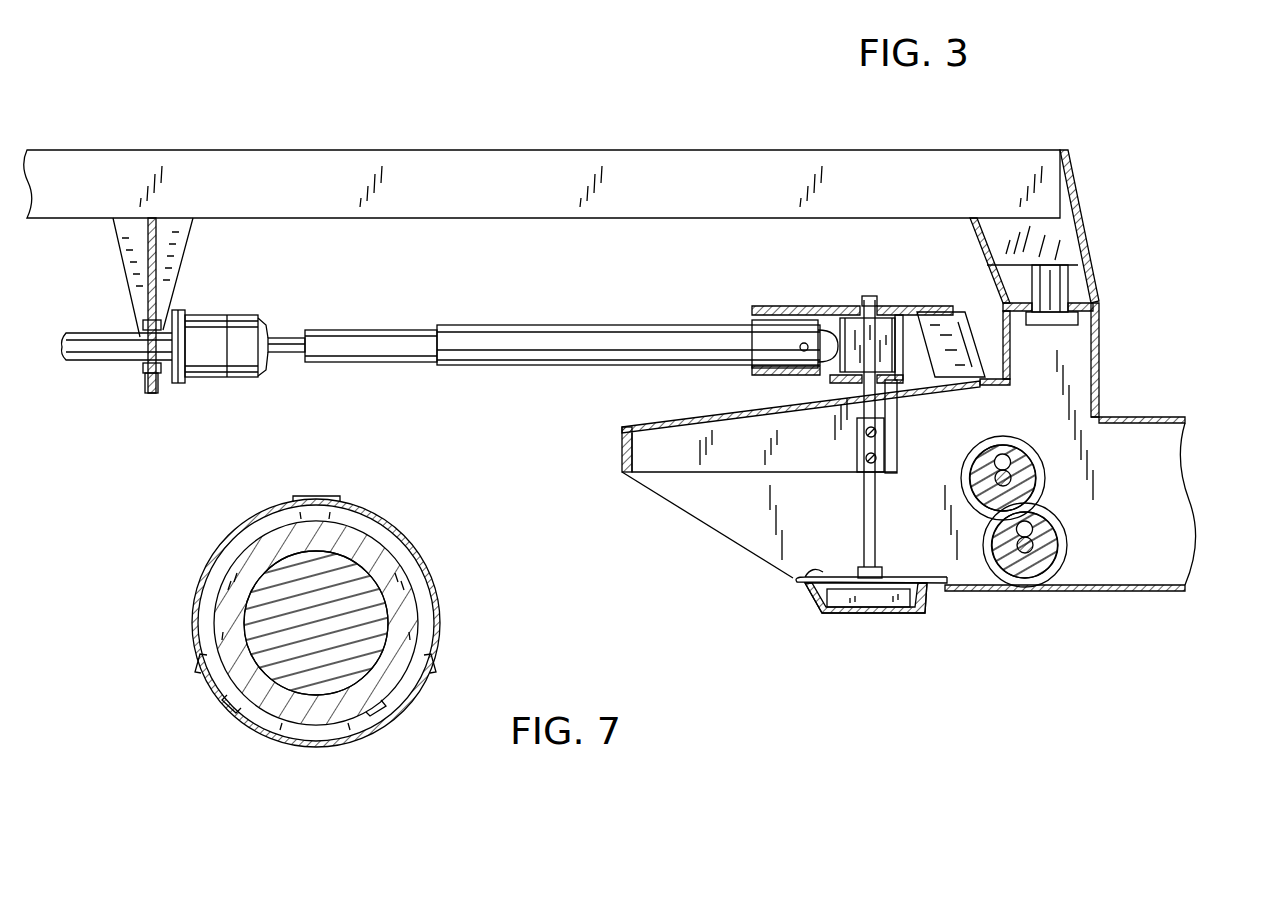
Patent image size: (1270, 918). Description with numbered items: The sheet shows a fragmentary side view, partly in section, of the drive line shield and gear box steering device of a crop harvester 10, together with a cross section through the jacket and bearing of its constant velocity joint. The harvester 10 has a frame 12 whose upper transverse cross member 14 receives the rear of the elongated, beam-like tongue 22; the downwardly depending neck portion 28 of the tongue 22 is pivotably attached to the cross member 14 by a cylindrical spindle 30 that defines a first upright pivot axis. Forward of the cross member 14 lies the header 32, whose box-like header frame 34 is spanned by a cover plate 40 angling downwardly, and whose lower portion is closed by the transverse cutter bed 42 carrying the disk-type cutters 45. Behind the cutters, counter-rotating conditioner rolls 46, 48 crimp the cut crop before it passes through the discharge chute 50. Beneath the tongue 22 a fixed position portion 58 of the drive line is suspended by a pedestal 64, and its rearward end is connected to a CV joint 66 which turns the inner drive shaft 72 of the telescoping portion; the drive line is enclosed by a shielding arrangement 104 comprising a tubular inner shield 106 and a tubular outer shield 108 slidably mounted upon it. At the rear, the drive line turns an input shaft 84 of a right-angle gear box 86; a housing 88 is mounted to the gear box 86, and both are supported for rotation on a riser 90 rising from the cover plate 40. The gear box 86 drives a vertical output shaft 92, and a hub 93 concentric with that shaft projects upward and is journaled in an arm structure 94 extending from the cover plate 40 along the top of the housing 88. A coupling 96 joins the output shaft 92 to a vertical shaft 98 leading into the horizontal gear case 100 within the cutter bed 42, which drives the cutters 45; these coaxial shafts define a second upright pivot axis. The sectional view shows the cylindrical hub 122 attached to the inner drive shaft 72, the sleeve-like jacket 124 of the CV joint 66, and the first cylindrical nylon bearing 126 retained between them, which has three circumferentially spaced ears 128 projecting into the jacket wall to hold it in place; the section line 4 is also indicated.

In FIG. 3, the section line 4- 4 is at (140, 348).
In FIG. 3, the crop harvester 10 is at (1142, 165).
In FIG. 3, the frame 12 is at (1100, 367).
In FIG. 3, the cross member 14 is at (1097, 330).
In FIG. 3, the tongue 22 is at (668, 172).
In FIG. 3, the neck portion 28 is at (1082, 228).
In FIG. 3, the spindle 30 is at (1052, 285).
In FIG. 3, the header 32 is at (612, 453).
In FIG. 3, the header frame 34 is at (622, 445).
In FIG. 3, the cover plate 40 is at (740, 412).
In FIG. 3, the cutter bed 42 is at (800, 610).
In FIG. 3, the disk-type cutters 45 is at (812, 574).
In FIG. 3, the conditioner roll 46 is at (1047, 466).
In FIG. 3, the conditioner roll 48 is at (1066, 534).
In FIG. 3, the discharge chute 50 is at (1158, 423).
In FIG. 3, the fixed position portion 58 is at (80, 363).
In FIG. 3, the pedestal 64 is at (180, 255).
In FIG. 3, the CV joint 66 is at (238, 374).
In FIG. 7, the inner drive shaft 72 is at (345, 582).
In FIG. 3, the input shaft 84 is at (836, 338).
In FIG. 3, the gear box 86 is at (855, 330).
In FIG. 3, the housing 88 is at (800, 313).
In FIG. 3, the riser 90 is at (818, 398).
In FIG. 3, the output shaft 92 is at (873, 393).
In FIG. 3, the hub 93 is at (870, 308).
In FIG. 3, the arm structure 94 is at (942, 306).
In FIG. 3, the coupling 96 is at (880, 446).
In FIG. 3, the vertical shaft 98 is at (868, 546).
In FIG. 3, the gear case 100 is at (885, 604).
In FIG. 3, the shielding arrangement 104 is at (533, 322).
In FIG. 3, the inner shield 106 is at (360, 327).
In FIG. 3, the outer shield 108 is at (628, 325).
In FIG. 7, the cylindrical hub 122 is at (382, 580).
In FIG. 7, the jacket 124 is at (360, 510).
In FIG. 7, the first cylindrical nylon bearing 126 is at (423, 627).
In FIG. 7, the ears 128 is at (437, 678).